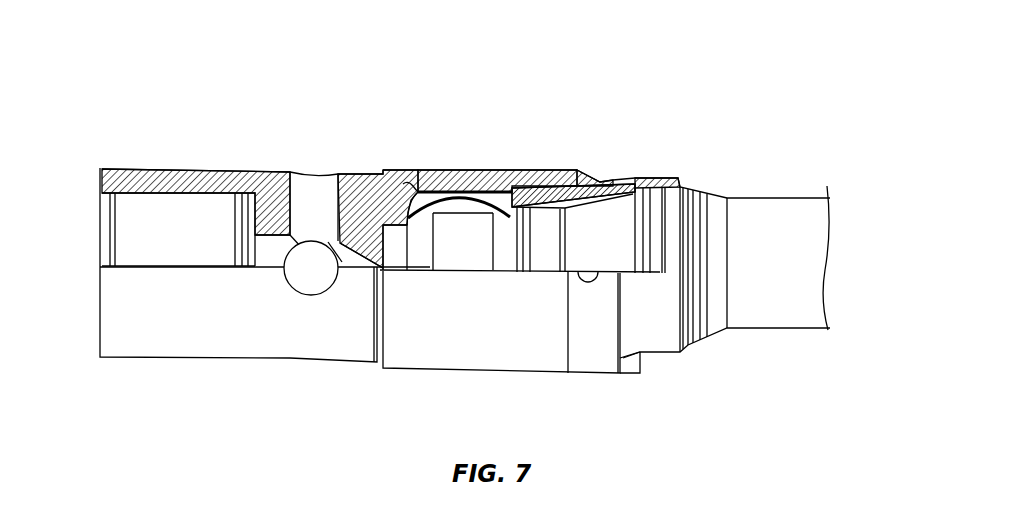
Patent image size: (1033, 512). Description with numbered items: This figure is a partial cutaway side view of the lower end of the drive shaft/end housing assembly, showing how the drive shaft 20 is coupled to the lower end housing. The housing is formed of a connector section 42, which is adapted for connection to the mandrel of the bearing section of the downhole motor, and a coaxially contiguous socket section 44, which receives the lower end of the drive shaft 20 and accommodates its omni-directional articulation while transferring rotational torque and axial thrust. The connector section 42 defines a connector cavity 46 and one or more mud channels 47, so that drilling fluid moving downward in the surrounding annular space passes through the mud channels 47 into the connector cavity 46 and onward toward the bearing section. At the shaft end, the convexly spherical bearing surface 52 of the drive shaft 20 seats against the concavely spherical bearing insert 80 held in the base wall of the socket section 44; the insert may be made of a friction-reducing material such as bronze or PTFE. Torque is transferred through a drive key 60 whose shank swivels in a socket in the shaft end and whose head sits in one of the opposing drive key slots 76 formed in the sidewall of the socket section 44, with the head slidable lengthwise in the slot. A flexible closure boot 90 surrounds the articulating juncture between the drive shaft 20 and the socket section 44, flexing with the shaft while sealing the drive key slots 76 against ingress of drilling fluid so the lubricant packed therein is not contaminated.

The drive shaft 20 is at (775, 330).
The connector section 42 is at (190, 362).
The socket section 44 is at (417, 372).
The connector cavity 46 is at (193, 254).
The mud channels 47 is at (317, 187).
The convexly spherical bearing surface 52 is at (426, 250).
The drive key 60 is at (468, 200).
The drive key slots 76 is at (415, 192).
The bearing insert 80 is at (363, 268).
The closure boot 90 is at (628, 182).